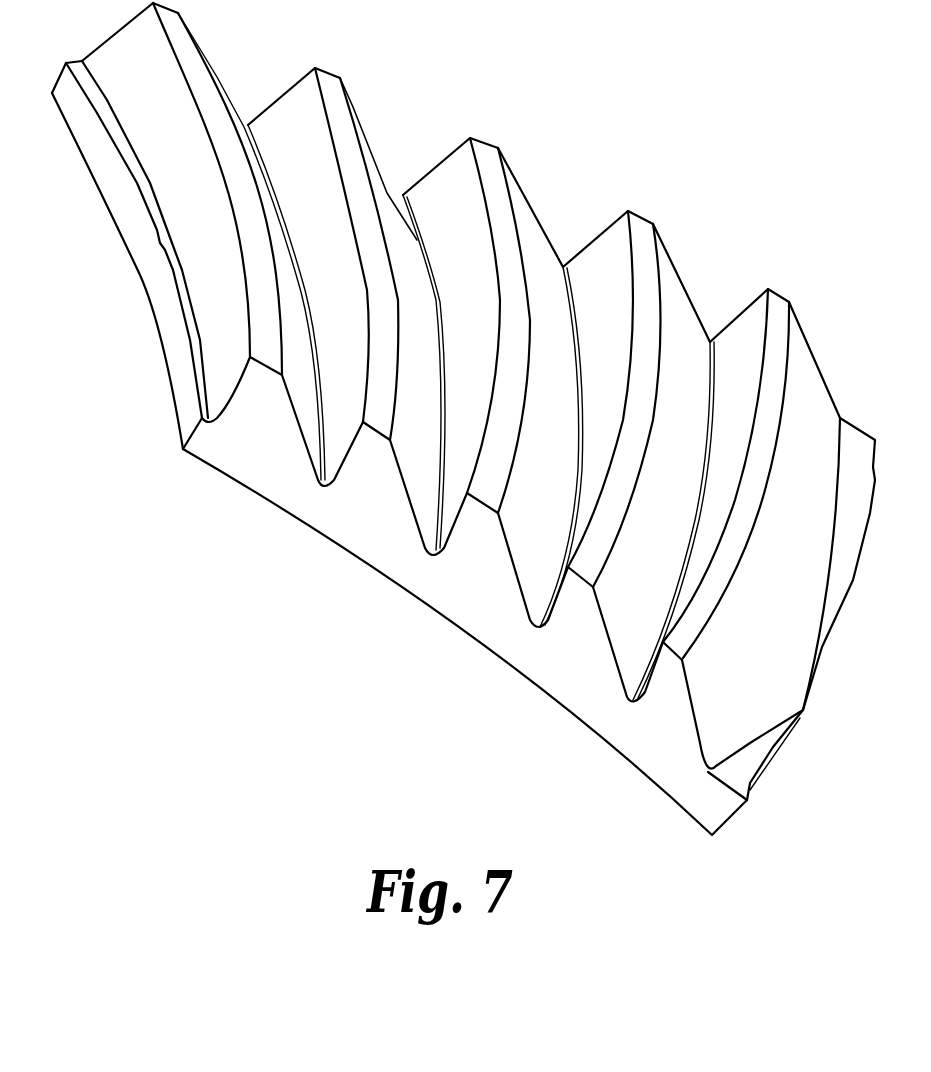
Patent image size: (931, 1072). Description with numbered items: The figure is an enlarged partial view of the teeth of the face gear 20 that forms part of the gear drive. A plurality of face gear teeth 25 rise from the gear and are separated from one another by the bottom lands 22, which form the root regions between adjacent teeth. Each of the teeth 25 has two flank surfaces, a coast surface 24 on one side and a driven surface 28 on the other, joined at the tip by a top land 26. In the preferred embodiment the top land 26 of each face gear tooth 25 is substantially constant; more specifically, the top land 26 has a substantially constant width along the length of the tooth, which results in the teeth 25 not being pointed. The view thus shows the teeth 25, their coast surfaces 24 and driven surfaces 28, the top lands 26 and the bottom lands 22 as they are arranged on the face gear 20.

The face gear 20 is at (728, 150).
The bottom lands 22 is at (423, 237).
The coast surface 24 is at (467, 218).
The face gear teeth 25 is at (382, 343).
The top land 26 is at (498, 187).
The driven surface 28 is at (530, 240).